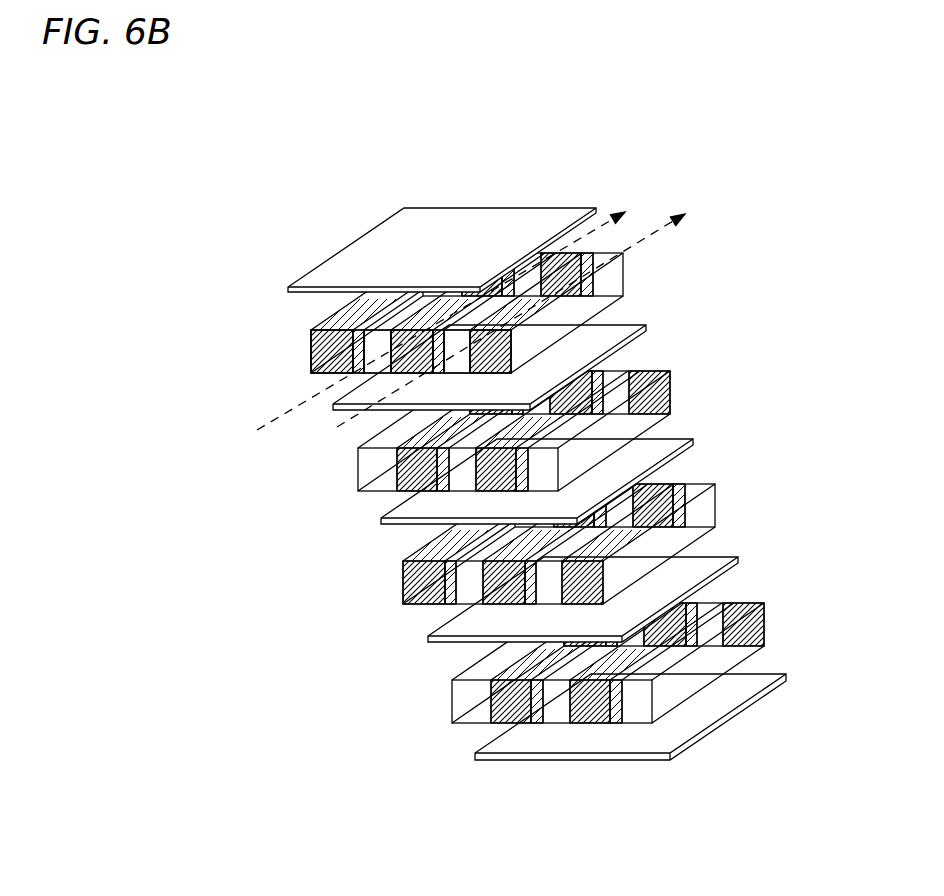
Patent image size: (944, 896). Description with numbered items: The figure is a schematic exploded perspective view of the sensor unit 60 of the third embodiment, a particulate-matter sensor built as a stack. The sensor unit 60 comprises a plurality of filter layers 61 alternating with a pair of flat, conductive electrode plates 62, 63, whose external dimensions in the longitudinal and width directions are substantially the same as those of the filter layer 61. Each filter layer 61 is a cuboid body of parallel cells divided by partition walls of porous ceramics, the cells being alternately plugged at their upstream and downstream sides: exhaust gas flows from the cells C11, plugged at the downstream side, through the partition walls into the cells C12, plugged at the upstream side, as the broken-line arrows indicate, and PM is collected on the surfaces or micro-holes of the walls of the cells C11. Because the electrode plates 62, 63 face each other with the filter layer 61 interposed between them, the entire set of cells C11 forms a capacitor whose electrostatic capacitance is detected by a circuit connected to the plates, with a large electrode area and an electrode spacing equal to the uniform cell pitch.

The sensor unit 60 is at (460, 435).
The filter layer 61 is at (452, 705).
The electrode plate 62 is at (430, 777).
The electrode plate 63 is at (333, 407).
The cells C11 is at (600, 157).
The cells C12 is at (655, 183).